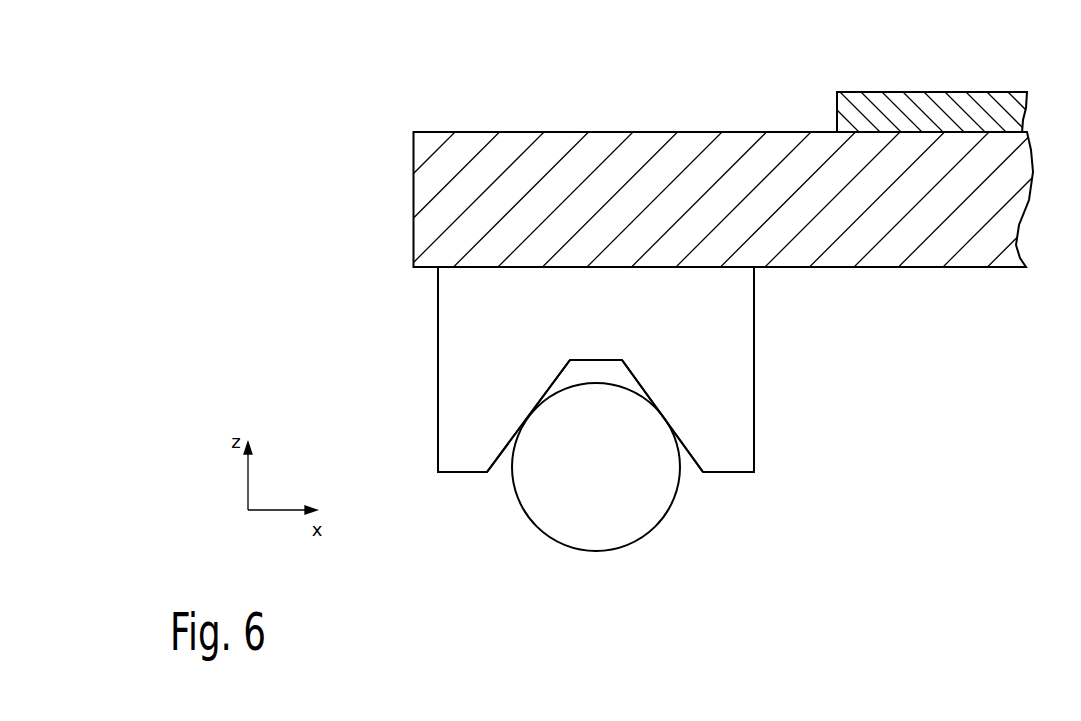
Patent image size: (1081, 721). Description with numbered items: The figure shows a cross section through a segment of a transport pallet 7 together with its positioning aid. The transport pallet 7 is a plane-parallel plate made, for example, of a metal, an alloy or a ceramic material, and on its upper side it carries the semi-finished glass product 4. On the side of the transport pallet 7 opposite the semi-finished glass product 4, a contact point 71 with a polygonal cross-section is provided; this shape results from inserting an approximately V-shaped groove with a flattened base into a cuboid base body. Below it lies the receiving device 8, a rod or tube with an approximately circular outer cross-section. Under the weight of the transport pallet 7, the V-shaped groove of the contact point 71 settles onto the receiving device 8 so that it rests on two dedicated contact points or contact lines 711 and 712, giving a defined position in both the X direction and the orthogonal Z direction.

The transport pallet 7 is at (605, 132).
The semi-finished glass product 4 is at (912, 92).
The contact point 71 is at (438, 331).
The contact line 711 is at (662, 412).
The contact line 712 is at (528, 414).
The receiving device 8 is at (655, 527).